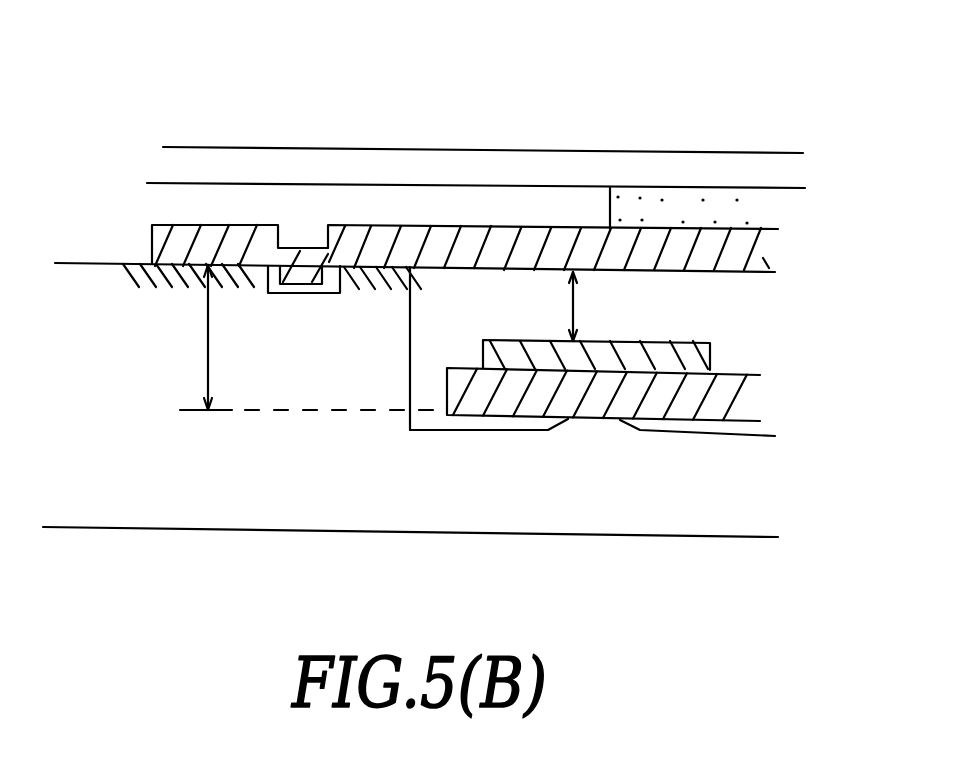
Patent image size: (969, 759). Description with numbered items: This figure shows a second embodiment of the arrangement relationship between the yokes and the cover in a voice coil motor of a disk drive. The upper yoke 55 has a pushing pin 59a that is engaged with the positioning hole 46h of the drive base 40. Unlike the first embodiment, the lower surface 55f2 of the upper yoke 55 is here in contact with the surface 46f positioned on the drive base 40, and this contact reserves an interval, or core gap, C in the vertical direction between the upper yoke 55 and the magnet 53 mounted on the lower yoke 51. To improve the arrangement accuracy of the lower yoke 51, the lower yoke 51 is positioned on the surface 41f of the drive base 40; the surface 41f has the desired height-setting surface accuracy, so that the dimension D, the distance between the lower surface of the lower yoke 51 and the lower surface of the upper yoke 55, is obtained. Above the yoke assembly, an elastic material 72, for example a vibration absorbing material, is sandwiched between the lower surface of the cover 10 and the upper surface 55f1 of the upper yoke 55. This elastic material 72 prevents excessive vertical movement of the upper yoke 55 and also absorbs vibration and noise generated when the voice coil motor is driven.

The cover 10 is at (200, 157).
The upper yoke 55 is at (722, 242).
The upper surface of the upper yoke 55f1 is at (547, 227).
The lower surface of the upper yoke 55f2 is at (250, 310).
The pushing pin 59a is at (302, 272).
The positioning hole 46h is at (328, 275).
The surface for positioning 46f is at (389, 267).
The elastic material 72 is at (631, 203).
The surface 41f is at (570, 418).
The lower yoke 51 is at (600, 558).
The magnet 53 is at (797, 362).
The drive base 40 is at (718, 517).
The interval (core gap) C is at (772, 307).
The dimension D is at (207, 330).